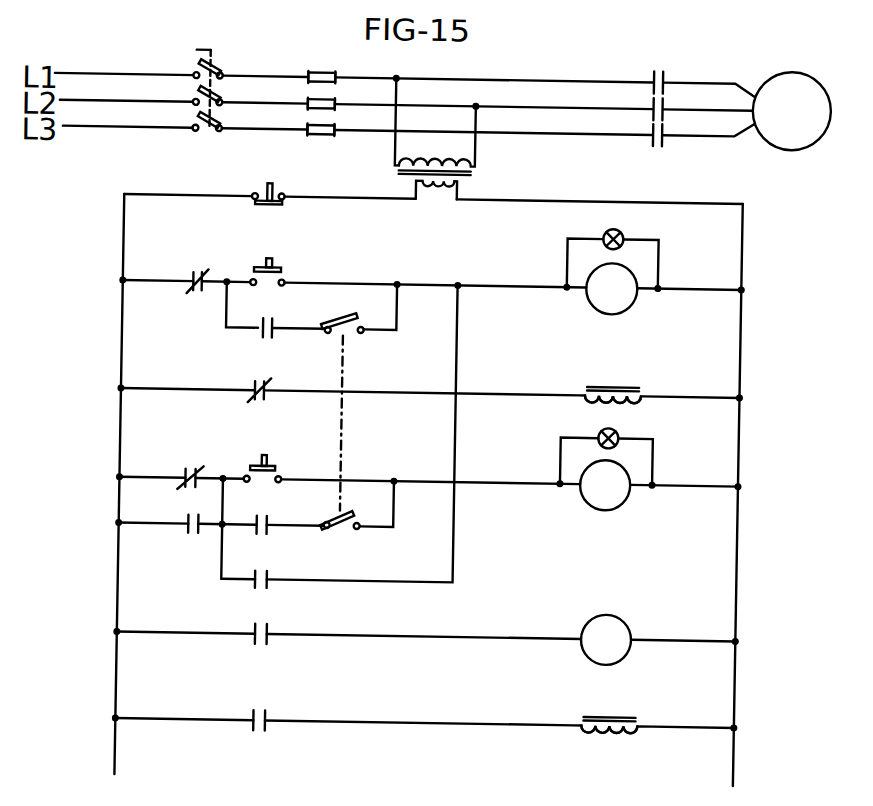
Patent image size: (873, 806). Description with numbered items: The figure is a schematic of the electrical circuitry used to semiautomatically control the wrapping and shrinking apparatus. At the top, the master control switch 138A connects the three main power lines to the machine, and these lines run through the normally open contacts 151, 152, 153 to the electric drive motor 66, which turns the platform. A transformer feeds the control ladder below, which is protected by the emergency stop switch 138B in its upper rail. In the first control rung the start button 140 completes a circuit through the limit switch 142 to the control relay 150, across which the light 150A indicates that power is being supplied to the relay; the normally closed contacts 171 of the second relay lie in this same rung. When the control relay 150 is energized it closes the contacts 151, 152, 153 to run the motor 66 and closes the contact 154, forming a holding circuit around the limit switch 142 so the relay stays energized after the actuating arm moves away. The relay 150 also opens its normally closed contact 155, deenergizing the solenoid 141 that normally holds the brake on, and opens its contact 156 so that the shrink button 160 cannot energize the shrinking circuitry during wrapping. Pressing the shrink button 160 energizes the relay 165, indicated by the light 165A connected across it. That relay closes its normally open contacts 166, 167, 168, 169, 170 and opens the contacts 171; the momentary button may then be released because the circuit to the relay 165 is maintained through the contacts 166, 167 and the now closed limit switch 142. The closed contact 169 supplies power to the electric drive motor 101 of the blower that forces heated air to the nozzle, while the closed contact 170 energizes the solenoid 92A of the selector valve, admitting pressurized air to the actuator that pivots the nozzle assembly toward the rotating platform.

The master control switch 138A is at (232, 63).
The emergency stop switch 138B is at (268, 186).
The electric drive motor 66 is at (792, 78).
The normally open contact 151 is at (661, 74).
The normally open contact 152 is at (661, 114).
The normally open contact 153 is at (662, 140).
The start button 140 is at (265, 261).
The limit switch 142 is at (332, 318).
The normally closed contacts 171 is at (186, 295).
The normally open contact 154 is at (258, 334).
The control relay 150 is at (630, 274).
The light 150A is at (618, 230).
The normally closed contact 155 is at (251, 398).
The solenoid 141 is at (640, 390).
The normally closed contact 156 is at (182, 472).
The shrink button 160 is at (295, 442).
The relay 165 is at (628, 471).
The light 165A is at (618, 428).
The normally open contact 166 is at (188, 534).
The normally open contact 167 is at (272, 534).
The normally open contact 168 is at (272, 586).
The normally open contact 169 is at (272, 641).
The normally open contact 170 is at (271, 718).
The electric drive motor 101 is at (630, 624).
The solenoid 92A is at (638, 720).